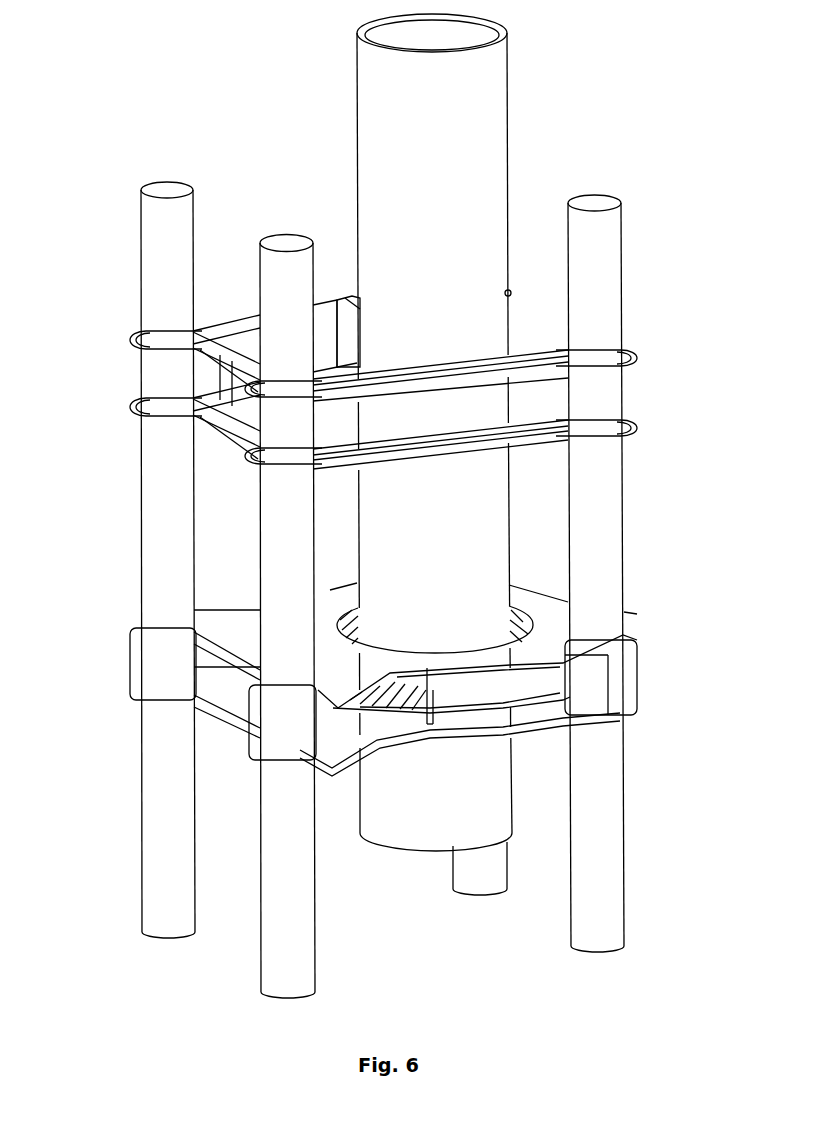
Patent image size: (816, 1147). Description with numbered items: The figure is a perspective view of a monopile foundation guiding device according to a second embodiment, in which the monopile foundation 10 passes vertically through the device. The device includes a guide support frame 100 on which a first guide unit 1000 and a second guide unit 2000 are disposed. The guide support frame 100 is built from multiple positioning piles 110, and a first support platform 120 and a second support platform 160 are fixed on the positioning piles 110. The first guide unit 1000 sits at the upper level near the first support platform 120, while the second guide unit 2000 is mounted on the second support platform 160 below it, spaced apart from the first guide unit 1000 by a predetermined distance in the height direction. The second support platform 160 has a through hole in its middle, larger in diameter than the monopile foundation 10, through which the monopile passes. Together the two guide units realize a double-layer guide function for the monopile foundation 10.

The monopile foundation 10 is at (475, 102).
The guide support frame 100 is at (128, 526).
The positioning piles 110 is at (610, 253).
The first support platform 120 is at (560, 370).
The second support platform 160 is at (537, 651).
The first guide unit 1000 is at (340, 296).
The second guide unit 2000 is at (410, 712).